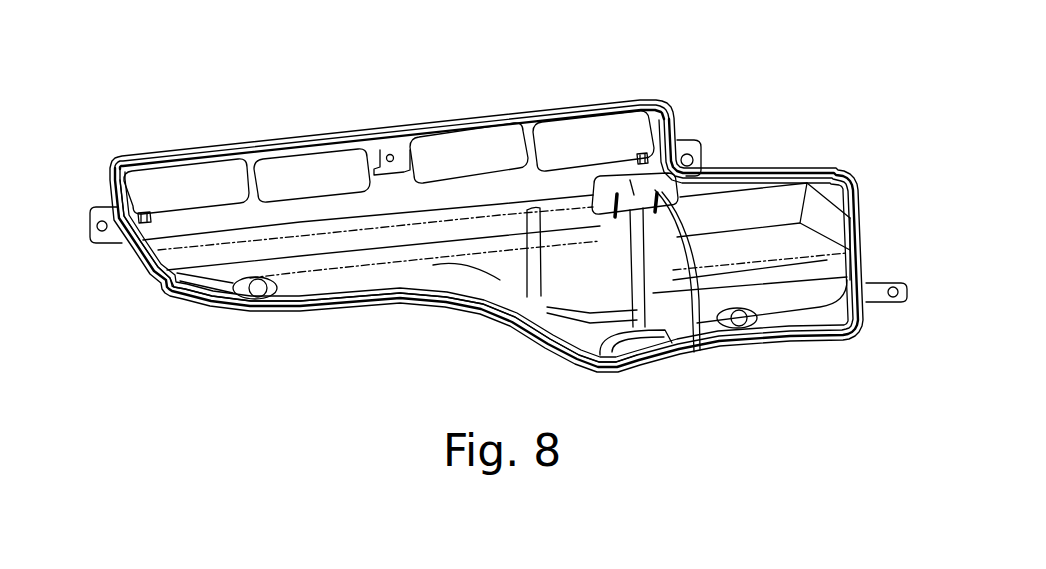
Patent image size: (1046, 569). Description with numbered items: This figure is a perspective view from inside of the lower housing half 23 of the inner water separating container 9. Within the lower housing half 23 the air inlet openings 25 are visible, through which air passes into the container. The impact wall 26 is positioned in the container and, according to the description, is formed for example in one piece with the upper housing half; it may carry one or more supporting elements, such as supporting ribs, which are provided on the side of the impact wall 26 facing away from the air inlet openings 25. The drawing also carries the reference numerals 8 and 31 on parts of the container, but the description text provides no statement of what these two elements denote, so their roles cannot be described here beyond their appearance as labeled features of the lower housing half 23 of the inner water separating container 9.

The tray 8 is at (616, 373).
The inner water separating container 9 is at (579, 94).
The lower housing half 23 is at (303, 311).
The air inlet openings 25 is at (307, 170).
The impact wall 26 is at (633, 192).
The rib 31 is at (689, 325).